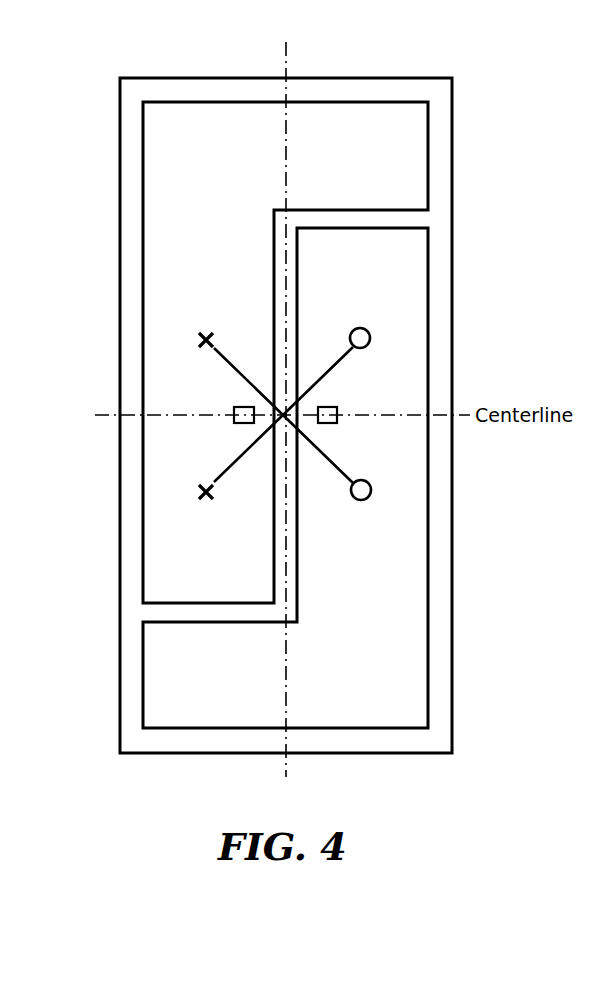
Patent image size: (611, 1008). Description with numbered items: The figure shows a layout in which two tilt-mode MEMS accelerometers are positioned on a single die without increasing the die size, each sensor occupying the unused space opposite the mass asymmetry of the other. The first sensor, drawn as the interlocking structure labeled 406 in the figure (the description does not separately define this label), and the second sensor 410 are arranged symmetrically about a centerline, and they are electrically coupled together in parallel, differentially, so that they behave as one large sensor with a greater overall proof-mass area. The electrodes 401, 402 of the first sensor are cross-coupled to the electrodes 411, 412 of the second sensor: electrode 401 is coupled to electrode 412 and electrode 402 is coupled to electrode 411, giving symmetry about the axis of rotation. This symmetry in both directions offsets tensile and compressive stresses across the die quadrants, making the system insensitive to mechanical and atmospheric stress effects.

The electrode 401 is at (206, 330).
The electrode 402 is at (205, 502).
The first electrode 406 is at (338, 120).
The second sensor 410 is at (392, 659).
The electrode 411 is at (360, 327).
The electrode 412 is at (358, 501).